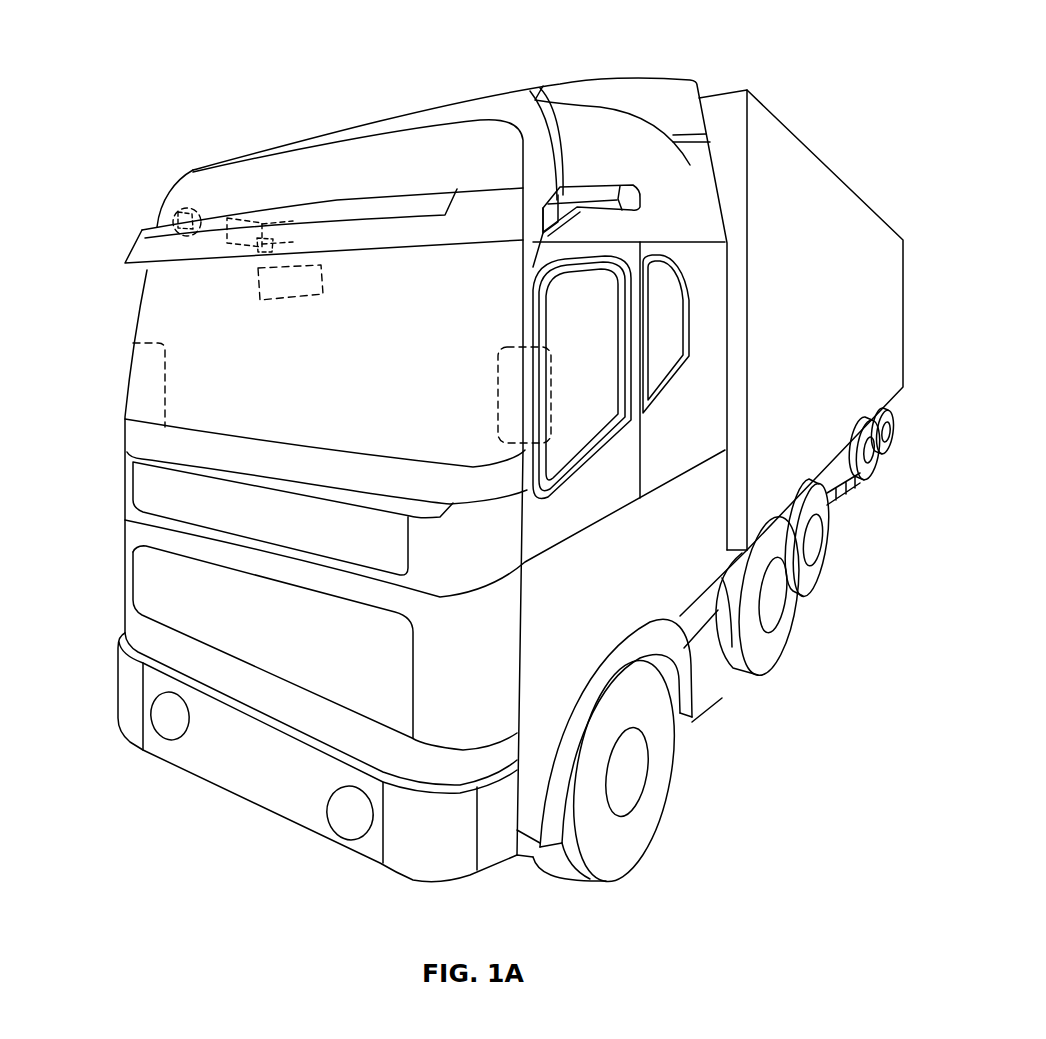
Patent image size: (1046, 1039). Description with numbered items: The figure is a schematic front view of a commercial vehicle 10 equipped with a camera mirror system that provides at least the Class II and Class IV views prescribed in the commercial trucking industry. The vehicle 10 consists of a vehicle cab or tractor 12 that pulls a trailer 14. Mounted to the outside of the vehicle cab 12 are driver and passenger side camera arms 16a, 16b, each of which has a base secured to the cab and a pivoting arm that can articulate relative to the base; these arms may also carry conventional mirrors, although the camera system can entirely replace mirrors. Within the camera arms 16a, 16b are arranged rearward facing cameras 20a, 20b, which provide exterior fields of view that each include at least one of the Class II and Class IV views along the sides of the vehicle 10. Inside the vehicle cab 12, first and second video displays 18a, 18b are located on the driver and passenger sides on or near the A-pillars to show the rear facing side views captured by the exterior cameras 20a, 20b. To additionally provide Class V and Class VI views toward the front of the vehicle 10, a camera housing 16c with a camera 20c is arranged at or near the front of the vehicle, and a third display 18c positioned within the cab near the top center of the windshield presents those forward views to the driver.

The commercial vehicle 10 is at (801, 56).
The vehicle cab 12 is at (112, 486).
The trailer 14 is at (892, 253).
The driver side camera arm 16a is at (570, 197).
The passenger side camera arm 16b is at (207, 207).
The camera housing 16c is at (248, 225).
The first video display 18a is at (513, 402).
The second video display 18b is at (157, 386).
The third display 18c is at (324, 287).
The rearward facing camera 20a is at (641, 199).
The rearward facing camera 20b is at (177, 210).
The camera 20c is at (267, 250).